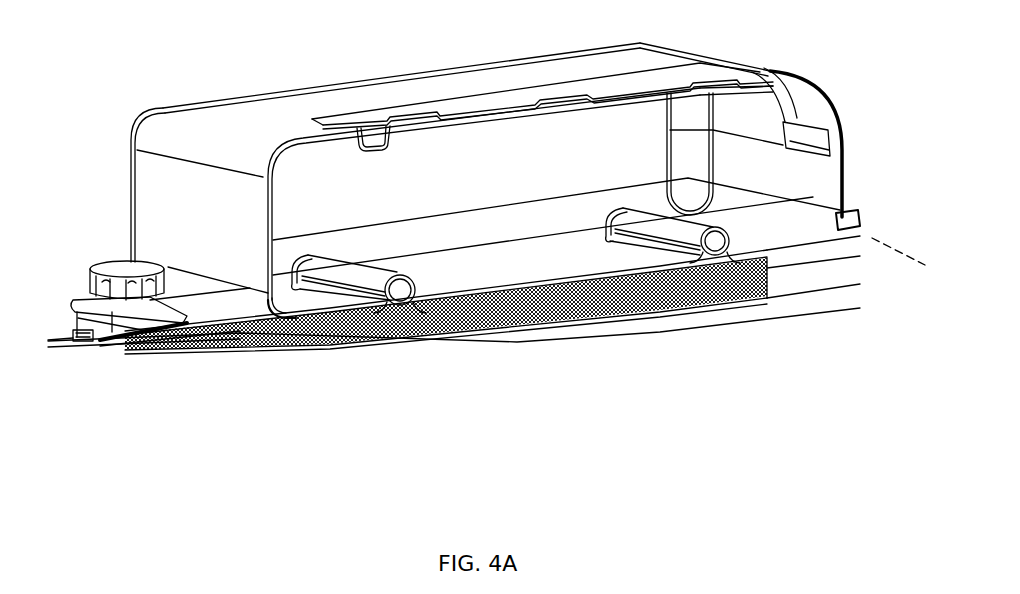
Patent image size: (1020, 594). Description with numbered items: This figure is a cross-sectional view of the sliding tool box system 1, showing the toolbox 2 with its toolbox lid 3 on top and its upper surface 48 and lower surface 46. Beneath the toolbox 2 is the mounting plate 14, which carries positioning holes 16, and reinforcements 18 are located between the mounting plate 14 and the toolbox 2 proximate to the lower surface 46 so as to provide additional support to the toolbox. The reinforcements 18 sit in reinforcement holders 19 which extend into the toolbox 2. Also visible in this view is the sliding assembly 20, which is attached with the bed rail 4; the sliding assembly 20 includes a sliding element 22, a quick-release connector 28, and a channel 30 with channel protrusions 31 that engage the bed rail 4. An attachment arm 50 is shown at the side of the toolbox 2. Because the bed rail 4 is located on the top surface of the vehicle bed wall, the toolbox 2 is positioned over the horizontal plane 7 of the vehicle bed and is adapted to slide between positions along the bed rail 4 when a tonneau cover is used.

The sliding tool box system 1 is at (201, 63).
The toolbox 2 is at (157, 139).
The toolbox lid 3 is at (467, 107).
The bed rails 4 is at (274, 324).
The horizontal plane 7 is at (898, 244).
The mounting plate 14 is at (205, 318).
The positioning holes 16 is at (173, 328).
The reinforcement 18 is at (399, 293).
The reinforcement holder 19 is at (383, 275).
The sliding assembly 20 is at (48, 237).
The sliding element 22 is at (123, 337).
The quick-release connector 28 is at (117, 269).
The channel 30 is at (87, 346).
The channel protrusions 31 is at (90, 338).
The lower surface 46 is at (814, 259).
The upper surface 48 is at (304, 95).
The attachment arm 50 is at (781, 266).